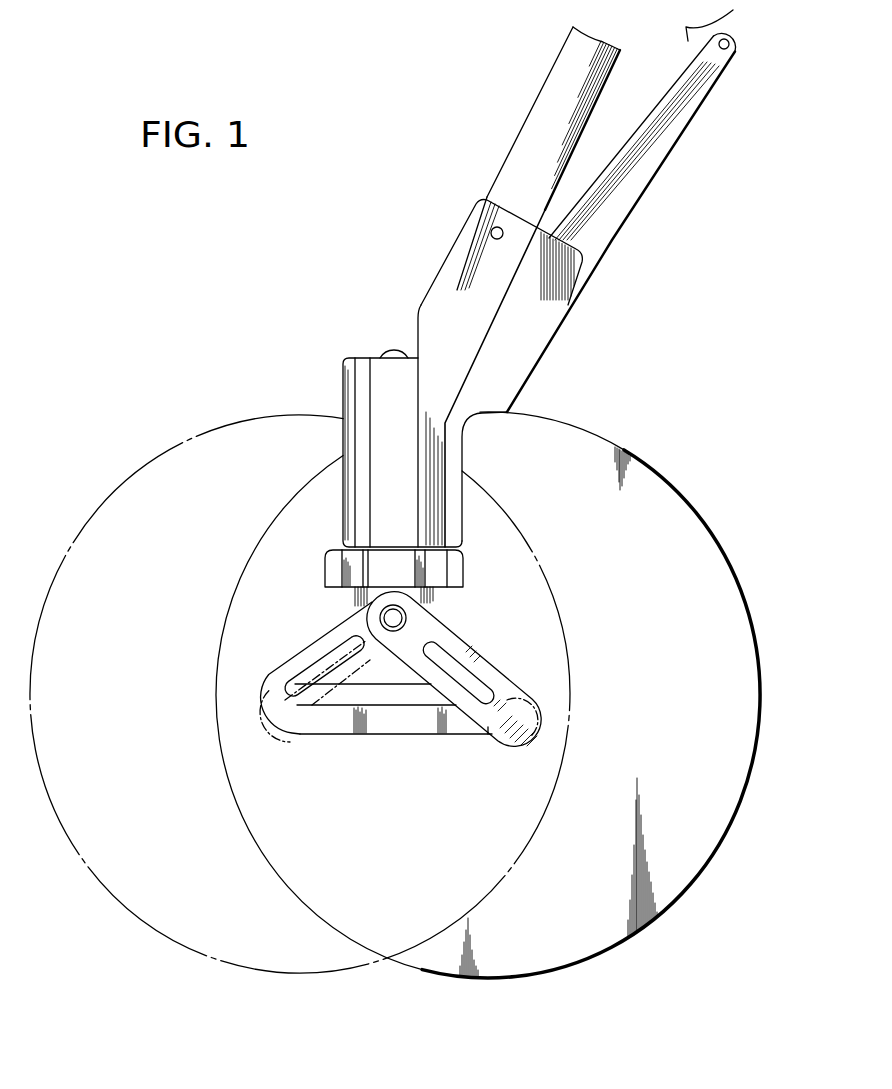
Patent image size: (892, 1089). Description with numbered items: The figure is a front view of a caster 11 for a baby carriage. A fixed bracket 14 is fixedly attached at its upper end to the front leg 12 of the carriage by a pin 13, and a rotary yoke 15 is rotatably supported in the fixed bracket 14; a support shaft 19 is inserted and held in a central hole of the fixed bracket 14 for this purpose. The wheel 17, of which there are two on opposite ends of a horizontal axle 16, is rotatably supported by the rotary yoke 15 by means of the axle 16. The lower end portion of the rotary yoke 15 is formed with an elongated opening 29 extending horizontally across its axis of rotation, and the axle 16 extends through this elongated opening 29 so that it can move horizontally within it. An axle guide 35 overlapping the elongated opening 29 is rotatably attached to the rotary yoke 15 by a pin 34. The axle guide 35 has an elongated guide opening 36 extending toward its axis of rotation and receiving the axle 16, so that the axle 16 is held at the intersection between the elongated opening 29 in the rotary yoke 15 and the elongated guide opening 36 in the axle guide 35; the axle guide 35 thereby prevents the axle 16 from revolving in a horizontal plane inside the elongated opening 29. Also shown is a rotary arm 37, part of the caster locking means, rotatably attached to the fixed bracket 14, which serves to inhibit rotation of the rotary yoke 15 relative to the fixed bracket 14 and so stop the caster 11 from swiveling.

The caster 11 is at (336, 310).
The front leg 12 is at (506, 160).
The pin 13 is at (493, 226).
The fixed bracket 14 is at (343, 403).
The rotary yoke 15 is at (393, 557).
The axle 16 is at (492, 690).
The wheel 17 is at (157, 457).
The support shaft 19 is at (393, 352).
The elongated opening 29 is at (390, 706).
The pin 34 is at (408, 615).
The axle guide 35 is at (250, 717).
The elongated guide opening 36 is at (458, 657).
The rotary arm 37 is at (623, 213).